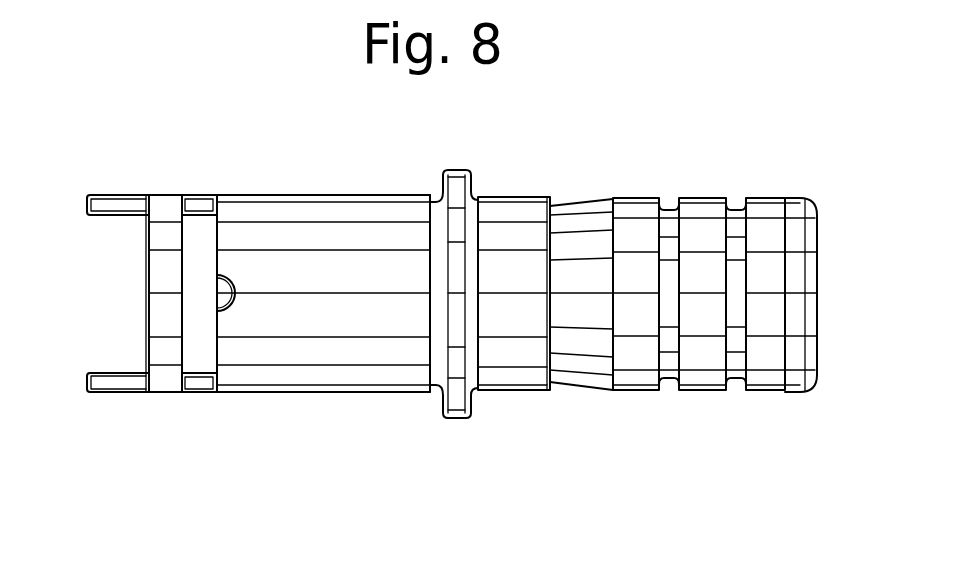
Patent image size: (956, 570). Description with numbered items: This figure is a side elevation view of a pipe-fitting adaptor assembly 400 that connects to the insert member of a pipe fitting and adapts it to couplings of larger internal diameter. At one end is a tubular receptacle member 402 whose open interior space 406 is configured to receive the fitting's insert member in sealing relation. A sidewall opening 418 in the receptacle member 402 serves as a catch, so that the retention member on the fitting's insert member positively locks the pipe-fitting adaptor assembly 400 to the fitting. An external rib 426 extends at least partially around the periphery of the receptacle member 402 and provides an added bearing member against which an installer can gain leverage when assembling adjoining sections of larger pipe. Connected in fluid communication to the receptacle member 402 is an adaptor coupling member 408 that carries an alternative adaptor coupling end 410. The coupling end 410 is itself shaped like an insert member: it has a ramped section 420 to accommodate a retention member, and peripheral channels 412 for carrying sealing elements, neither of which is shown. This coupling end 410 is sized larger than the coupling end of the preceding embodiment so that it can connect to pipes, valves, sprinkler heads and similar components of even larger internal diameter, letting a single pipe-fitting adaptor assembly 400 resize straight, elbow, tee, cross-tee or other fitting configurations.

The pipe-fitting adaptor assembly 400 is at (346, 165).
The tubular receptacle member 402 is at (332, 373).
The open interior space 406 is at (208, 231).
The adaptor coupling member 408 is at (520, 197).
The adaptor coupling end 410 is at (772, 198).
The peripheral channels 412 is at (663, 390).
The sidewall opening 418 is at (182, 362).
The ramped section 420 is at (582, 387).
The external rib 426 is at (459, 170).